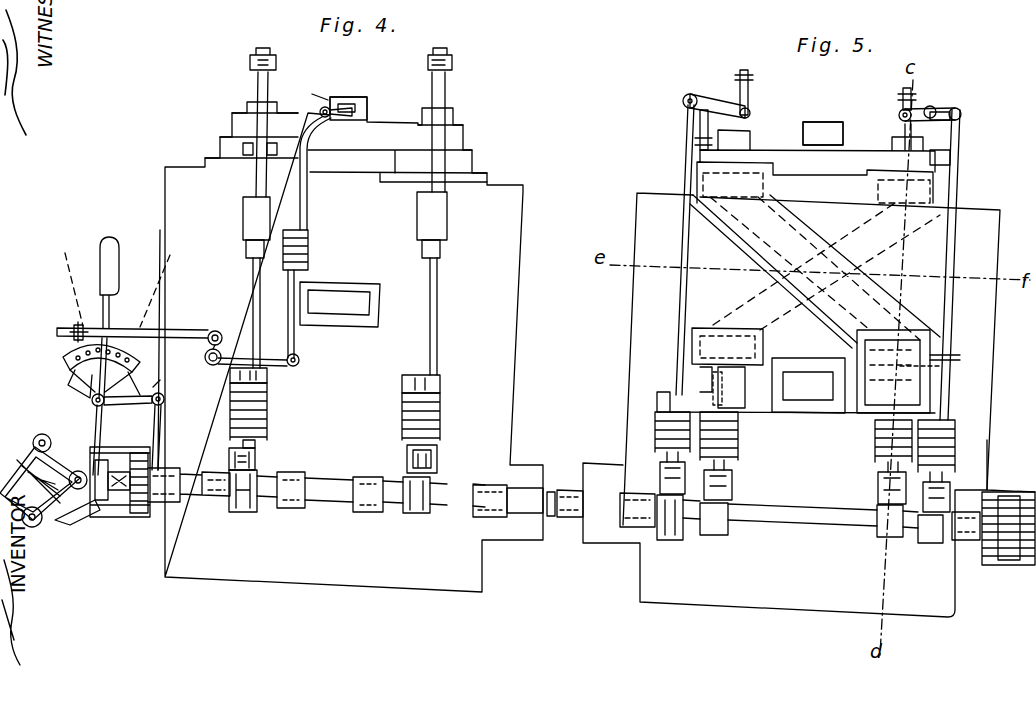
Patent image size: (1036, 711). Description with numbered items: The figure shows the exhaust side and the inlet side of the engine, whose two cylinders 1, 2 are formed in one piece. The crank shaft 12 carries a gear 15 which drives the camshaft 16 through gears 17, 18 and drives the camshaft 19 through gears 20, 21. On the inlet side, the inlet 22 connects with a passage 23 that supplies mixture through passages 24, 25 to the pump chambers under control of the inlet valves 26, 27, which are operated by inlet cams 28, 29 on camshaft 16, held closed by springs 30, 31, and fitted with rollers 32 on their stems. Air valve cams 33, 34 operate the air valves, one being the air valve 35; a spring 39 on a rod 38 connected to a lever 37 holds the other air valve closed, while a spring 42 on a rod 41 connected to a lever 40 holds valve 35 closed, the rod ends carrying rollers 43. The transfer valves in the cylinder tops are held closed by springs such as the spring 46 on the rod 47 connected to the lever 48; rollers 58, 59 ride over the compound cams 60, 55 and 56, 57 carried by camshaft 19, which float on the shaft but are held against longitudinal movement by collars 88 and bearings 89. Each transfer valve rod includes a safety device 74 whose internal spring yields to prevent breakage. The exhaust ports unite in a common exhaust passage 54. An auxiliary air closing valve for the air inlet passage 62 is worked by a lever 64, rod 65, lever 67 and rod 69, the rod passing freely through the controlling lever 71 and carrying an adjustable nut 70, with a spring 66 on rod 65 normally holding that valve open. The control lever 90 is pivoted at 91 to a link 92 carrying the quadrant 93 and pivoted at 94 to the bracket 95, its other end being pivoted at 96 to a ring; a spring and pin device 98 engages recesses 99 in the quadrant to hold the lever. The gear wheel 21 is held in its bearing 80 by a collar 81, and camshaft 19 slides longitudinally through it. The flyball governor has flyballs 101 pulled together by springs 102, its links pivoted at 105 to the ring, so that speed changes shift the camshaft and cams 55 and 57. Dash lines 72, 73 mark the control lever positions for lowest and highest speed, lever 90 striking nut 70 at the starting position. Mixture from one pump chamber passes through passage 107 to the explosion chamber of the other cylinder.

In FIG. 4, the cylinder 1 is at (170, 223).
In FIG. 5, the cylinder 1 is at (990, 338).
In FIG. 4, the cylinder 2 is at (515, 287).
In FIG. 5, the cylinder 2 is at (640, 286).
In FIG. 4, the crank shaft 12 is at (560, 488).
In FIG. 4, the gear 15 is at (100, 517).
In FIG. 5, the gear 15 is at (1032, 490).
In FIG. 5, the camshaft 16 is at (812, 518).
In FIG. 5, the gear 17 is at (1015, 558).
In FIG. 5, the gear 18 is at (990, 550).
In FIG. 4, the camshaft 19 is at (320, 490).
In FIG. 4, the gear 20 is at (120, 518).
In FIG. 4, the gear wheel 21 is at (143, 517).
In FIG. 5, the inlet 22 is at (808, 385).
In FIG. 5, the passage 23 is at (796, 371).
In FIG. 5, the passage 24 is at (951, 355).
In FIG. 5, the passage 25 is at (727, 346).
In FIG. 5, the inlet valve 26 is at (925, 368).
In FIG. 5, the inlet valve 27 is at (713, 375).
In FIG. 5, the inlet cam 28 is at (887, 538).
In FIG. 5, the inlet cam 29 is at (716, 535).
In FIG. 5, the spring 30 is at (876, 442).
In FIG. 5, the spring 31 is at (738, 438).
In FIG. 5, the rollers 32 is at (733, 490).
In FIG. 5, the air valve cam 33 is at (684, 524).
In FIG. 5, the air valve cam 34 is at (938, 543).
In FIG. 5, the air valve 35 is at (750, 116).
In FIG. 5, the lever 37 is at (958, 108).
In FIG. 5, the rod 38 is at (955, 155).
In FIG. 5, the spring 39 is at (955, 444).
In FIG. 5, the lever 40 is at (705, 97).
In FIG. 5, the rod 41 is at (685, 128).
In FIG. 5, the spring 42 is at (660, 436).
In FIG. 5, the rollers 43 is at (660, 480).
In FIG. 4, the spring 46 is at (440, 420).
In FIG. 4, the rod 47 is at (438, 276).
In FIG. 4, the lever 48 is at (268, 408).
In FIG. 4, the common exhaust passage 54 is at (330, 298).
In FIG. 4, the cam 55 is at (254, 512).
In FIG. 4, the cam 56 is at (378, 514).
In FIG. 4, the cam 57 is at (420, 516).
In FIG. 4, the roller 58 is at (258, 458).
In FIG. 4, the roller 59 is at (405, 462).
In FIG. 4, the cam 60 is at (238, 512).
In FIG. 4, the passage 62 is at (360, 92).
In FIG. 5, the passage 62 is at (843, 118).
In FIG. 4, the lever 64 is at (333, 124).
In FIG. 4, the rod 65 is at (307, 196).
In FIG. 4, the spring 66 is at (309, 243).
In FIG. 4, the lever 67 is at (275, 355).
In FIG. 4, the rod 69 is at (166, 338).
In FIG. 4, the nut 70 is at (74, 326).
In FIG. 4, the controlling lever 71 is at (114, 356).
In FIG. 4, the dash line 72 is at (66, 258).
In FIG. 4, the dash line 73 is at (168, 262).
In FIG. 4, the safety device 74 is at (247, 214).
In FIG. 4, the bearing 80 is at (176, 505).
In FIG. 4, the collar 81 is at (182, 500).
In FIG. 4, the collars 88 is at (195, 470).
In FIG. 4, the bearings 89 is at (300, 510).
In FIG. 4, the control lever 90 is at (112, 243).
In FIG. 4, the pivot 91 is at (92, 401).
In FIG. 4, the link 92 is at (142, 405).
In FIG. 4, the quadrant 93 is at (142, 364).
In FIG. 4, the pivot 94 is at (165, 393).
In FIG. 4, the bracket 95 is at (163, 412).
In FIG. 4, the pivot 96 is at (72, 505).
In FIG. 4, the holding device 98 is at (70, 380).
In FIG. 4, the recesses 99 is at (66, 355).
In FIG. 4, the flyballs 101 is at (36, 445).
In FIG. 4, the springs 102 is at (33, 445).
In FIG. 5, the pivot 105 is at (757, 296).
In FIG. 5, the passage 107 is at (880, 305).